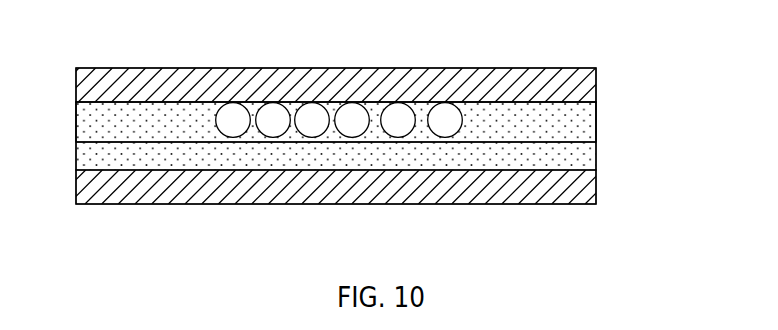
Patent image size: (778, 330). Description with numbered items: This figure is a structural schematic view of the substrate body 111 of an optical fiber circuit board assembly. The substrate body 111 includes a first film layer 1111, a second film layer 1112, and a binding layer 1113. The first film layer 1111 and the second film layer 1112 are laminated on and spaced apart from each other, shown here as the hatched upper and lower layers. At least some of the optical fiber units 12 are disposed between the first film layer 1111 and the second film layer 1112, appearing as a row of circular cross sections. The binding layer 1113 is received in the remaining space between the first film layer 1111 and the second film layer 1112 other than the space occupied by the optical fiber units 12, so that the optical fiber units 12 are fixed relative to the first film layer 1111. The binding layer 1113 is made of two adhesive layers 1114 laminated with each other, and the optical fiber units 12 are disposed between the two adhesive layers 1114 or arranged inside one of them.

The substrate body 111 is at (68, 24).
The optical fiber units 12 is at (234, 118).
The first film layer 1111 is at (584, 88).
The second film layer 1112 is at (583, 197).
The binding layer 1113 is at (683, 108).
The adhesive layers 1114 is at (581, 135).